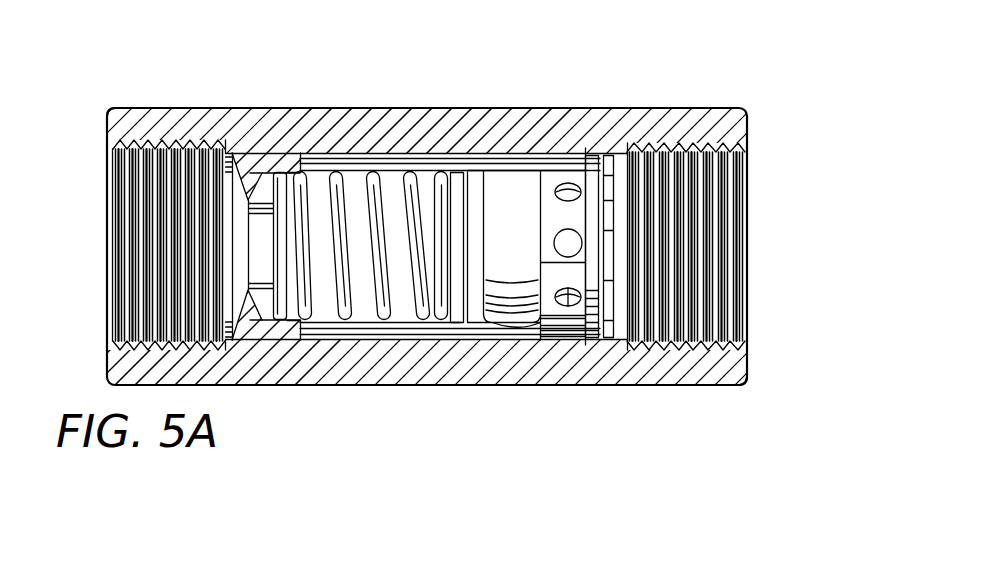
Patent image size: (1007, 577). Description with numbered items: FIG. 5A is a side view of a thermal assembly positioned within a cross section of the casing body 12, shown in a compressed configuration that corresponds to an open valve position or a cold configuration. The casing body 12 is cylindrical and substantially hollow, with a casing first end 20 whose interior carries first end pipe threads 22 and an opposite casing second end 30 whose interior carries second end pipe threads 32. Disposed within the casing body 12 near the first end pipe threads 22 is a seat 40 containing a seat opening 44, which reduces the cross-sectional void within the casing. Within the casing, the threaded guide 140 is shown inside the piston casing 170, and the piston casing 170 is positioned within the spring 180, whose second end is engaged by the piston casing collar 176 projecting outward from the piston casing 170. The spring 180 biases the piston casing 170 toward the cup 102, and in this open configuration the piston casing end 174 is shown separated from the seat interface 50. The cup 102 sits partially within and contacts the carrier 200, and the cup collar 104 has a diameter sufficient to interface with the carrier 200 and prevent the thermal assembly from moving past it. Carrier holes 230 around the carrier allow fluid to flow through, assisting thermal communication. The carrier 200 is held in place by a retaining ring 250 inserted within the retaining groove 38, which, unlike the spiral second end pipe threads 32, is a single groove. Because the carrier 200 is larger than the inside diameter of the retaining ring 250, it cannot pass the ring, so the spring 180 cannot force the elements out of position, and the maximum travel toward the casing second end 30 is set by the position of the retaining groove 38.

The casing body 12 is at (470, 385).
The casing first end 20 is at (126, 108).
The first end pipe threads 22 is at (165, 215).
The casing second end 30 is at (718, 385).
The second end pipe threads 32 is at (690, 243).
The retaining groove 38 is at (600, 148).
The seat 40 is at (283, 300).
The seat opening 44 is at (260, 247).
The seat interface 50 is at (252, 196).
The cup 102 is at (500, 190).
The cup collar 104 is at (565, 340).
The threaded guide 140 is at (480, 217).
The piston casing 170 is at (371, 300).
The piston casing end 174 is at (290, 250).
The piston casing collar 176 is at (452, 322).
The spring 180 is at (372, 175).
The carrier 200 is at (544, 195).
The carrier holes 230 is at (570, 325).
The retaining ring 250 is at (610, 195).